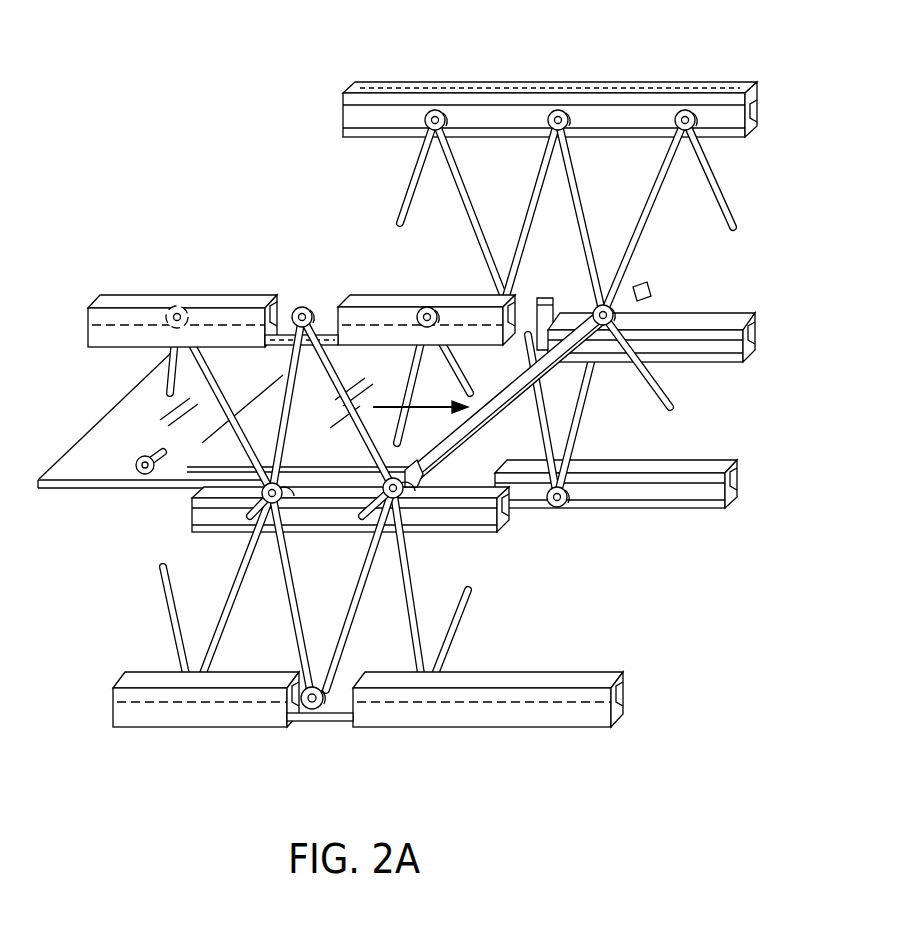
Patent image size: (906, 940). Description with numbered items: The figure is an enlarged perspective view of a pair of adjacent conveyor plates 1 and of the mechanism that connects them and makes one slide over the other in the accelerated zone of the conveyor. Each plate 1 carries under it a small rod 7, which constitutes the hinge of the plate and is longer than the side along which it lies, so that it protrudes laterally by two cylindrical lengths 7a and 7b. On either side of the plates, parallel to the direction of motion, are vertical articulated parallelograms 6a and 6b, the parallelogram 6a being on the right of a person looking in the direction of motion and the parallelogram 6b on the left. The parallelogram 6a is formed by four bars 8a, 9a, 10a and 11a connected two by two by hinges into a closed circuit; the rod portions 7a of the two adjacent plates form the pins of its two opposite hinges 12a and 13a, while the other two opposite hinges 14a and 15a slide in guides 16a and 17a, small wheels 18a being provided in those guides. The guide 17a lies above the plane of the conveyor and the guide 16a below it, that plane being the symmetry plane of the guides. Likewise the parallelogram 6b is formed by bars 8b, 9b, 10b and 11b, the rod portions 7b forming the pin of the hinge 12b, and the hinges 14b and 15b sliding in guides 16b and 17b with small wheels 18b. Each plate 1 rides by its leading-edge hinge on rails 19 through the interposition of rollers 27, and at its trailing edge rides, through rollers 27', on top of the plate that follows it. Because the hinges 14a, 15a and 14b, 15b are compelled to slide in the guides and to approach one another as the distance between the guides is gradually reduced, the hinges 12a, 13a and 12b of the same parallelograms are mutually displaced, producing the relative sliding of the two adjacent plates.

The plate 1 is at (120, 440).
The articulated parallelogram 6a is at (152, 603).
The articulated parallelogram 6b is at (398, 186).
The small rod 7 is at (545, 365).
The protruding length of rod 7a is at (260, 563).
The protruding length of rod 7b is at (600, 330).
The bar 8a is at (290, 375).
The bar 8b is at (503, 242).
The bar 9a is at (295, 617).
The bar 9b is at (532, 430).
The bar 10a is at (355, 407).
The bar 10b is at (600, 218).
The bar 11a is at (340, 636).
The bar 11b is at (580, 440).
The hinge 12a is at (368, 505).
The hinge 12b is at (648, 292).
The hinge 13a is at (248, 508).
The hinge 14a is at (335, 703).
The hinge 14b is at (562, 508).
The hinge 15a is at (318, 307).
The hinge 15b is at (445, 128).
The guide 16a is at (552, 680).
The guide 16b is at (718, 463).
The guide 17a is at (128, 297).
The guide 17b is at (402, 85).
The small wheel 18a is at (178, 302).
The small wheel 18b is at (572, 128).
The rail 19 is at (740, 318).
The roller 27 is at (447, 417).
The roller 27' is at (123, 461).